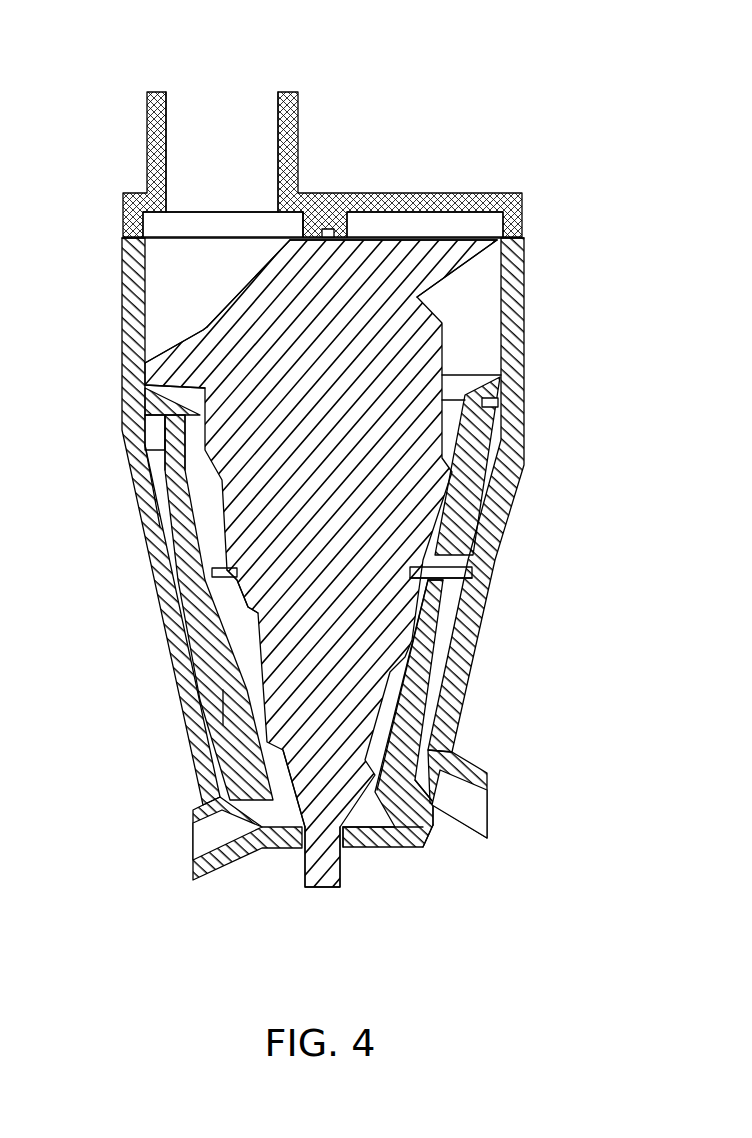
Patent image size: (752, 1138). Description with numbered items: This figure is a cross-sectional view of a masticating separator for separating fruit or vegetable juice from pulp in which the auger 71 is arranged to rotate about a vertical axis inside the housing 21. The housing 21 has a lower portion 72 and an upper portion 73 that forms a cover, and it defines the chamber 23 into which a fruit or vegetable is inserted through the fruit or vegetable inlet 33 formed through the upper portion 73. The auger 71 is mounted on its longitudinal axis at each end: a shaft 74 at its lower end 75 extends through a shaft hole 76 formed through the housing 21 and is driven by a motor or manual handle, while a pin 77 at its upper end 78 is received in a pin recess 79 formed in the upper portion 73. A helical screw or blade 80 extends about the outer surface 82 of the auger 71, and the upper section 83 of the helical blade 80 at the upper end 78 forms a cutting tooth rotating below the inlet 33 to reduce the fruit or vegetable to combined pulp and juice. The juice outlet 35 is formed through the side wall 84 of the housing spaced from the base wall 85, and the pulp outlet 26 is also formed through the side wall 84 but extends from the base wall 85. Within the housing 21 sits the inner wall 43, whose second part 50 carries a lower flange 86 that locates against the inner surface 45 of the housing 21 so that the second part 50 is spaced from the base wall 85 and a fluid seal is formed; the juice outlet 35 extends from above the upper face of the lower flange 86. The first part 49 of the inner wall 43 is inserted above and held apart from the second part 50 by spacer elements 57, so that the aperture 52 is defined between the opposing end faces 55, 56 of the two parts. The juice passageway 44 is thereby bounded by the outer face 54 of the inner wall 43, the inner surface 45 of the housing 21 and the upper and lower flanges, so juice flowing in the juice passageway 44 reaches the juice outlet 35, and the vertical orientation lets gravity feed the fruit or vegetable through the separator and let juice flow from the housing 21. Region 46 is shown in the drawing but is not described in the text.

The housing 21 is at (512, 524).
The chamber 23 is at (177, 285).
The pulp outlet 26 is at (208, 840).
The fruit or vegetable inlet 33 is at (226, 118).
The juice outlet 35 is at (478, 800).
The inner wall 43 is at (452, 712).
The juice passageway 44 is at (437, 667).
The inner surface of the housing 45 is at (168, 553).
The left sleeve 46 is at (172, 673).
The first part of the inner wall 49 is at (173, 453).
The second part of the inner wall 50 is at (180, 732).
The aperture 52 is at (488, 592).
The outer face of the inner wall 54 is at (163, 492).
The end face of the first part 55 is at (480, 565).
The end face of the second part 56 is at (486, 615).
The spacer elements 57 is at (185, 583).
The auger 71 is at (417, 353).
The lower portion of the housing 72 is at (468, 630).
The upper portion of the housing 73 is at (457, 195).
The shaft 74 is at (320, 868).
The lower end of the auger 75 is at (362, 847).
The shaft hole 76 is at (282, 847).
The pin 77 is at (323, 232).
The upper end of the auger 78 is at (368, 255).
The pin recess 79 is at (316, 233).
The helical screw or blade 80 is at (170, 363).
The outer surface of the auger 82 is at (172, 527).
The upper section of the helical blade 83 is at (450, 260).
The side wall of the housing 84 is at (453, 753).
The base wall of the housing 85 is at (395, 847).
The lower flange 86 is at (430, 833).